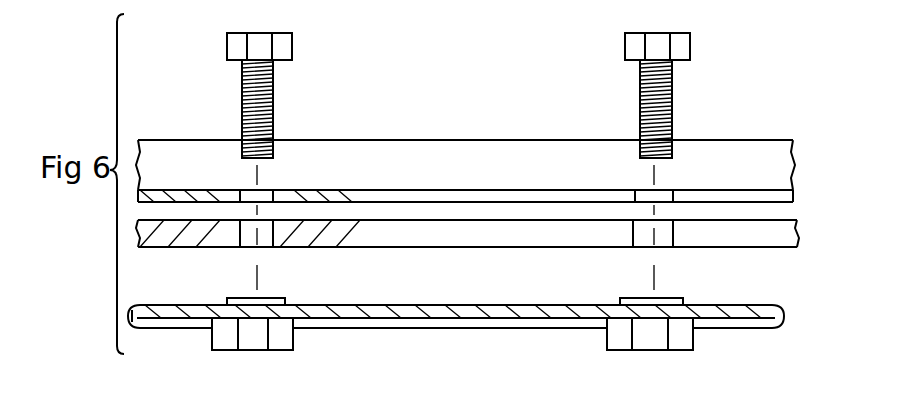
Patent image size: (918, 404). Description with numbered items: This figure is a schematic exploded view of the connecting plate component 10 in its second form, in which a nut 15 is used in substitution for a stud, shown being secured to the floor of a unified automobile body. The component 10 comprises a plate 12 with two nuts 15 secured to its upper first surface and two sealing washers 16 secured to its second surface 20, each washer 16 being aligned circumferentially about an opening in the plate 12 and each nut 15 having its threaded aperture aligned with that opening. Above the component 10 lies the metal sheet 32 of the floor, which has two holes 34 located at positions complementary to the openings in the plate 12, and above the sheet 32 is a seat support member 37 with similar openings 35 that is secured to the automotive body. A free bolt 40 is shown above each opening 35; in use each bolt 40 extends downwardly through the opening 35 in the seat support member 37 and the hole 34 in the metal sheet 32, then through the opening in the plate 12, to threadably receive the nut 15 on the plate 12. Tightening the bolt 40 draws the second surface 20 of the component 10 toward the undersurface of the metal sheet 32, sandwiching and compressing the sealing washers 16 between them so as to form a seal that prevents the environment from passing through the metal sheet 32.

The connecting plate component 10 is at (170, 288).
The plate 12 is at (560, 282).
The nut 15 is at (293, 343).
The sealing washer 16 is at (281, 298).
The second surface 20 is at (380, 305).
The metal sheet 32 is at (452, 251).
The hole 34 is at (268, 240).
The opening 35 is at (263, 192).
The seat support member 37 is at (463, 158).
The free bolt 40 is at (293, 46).